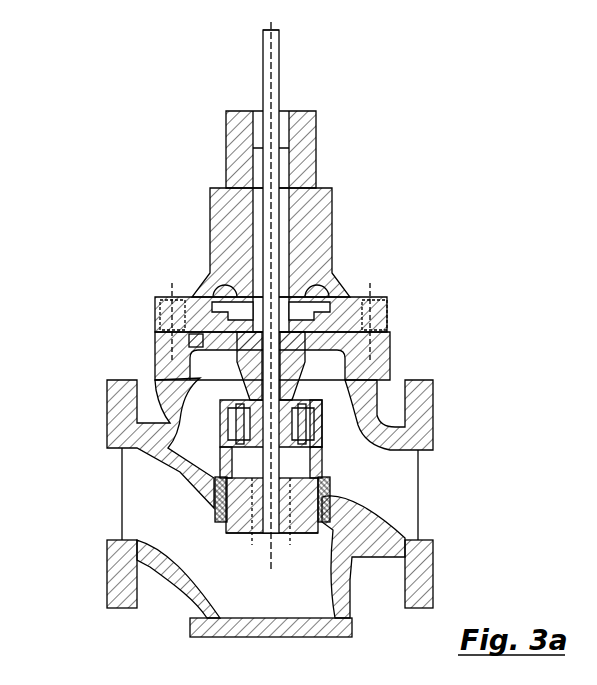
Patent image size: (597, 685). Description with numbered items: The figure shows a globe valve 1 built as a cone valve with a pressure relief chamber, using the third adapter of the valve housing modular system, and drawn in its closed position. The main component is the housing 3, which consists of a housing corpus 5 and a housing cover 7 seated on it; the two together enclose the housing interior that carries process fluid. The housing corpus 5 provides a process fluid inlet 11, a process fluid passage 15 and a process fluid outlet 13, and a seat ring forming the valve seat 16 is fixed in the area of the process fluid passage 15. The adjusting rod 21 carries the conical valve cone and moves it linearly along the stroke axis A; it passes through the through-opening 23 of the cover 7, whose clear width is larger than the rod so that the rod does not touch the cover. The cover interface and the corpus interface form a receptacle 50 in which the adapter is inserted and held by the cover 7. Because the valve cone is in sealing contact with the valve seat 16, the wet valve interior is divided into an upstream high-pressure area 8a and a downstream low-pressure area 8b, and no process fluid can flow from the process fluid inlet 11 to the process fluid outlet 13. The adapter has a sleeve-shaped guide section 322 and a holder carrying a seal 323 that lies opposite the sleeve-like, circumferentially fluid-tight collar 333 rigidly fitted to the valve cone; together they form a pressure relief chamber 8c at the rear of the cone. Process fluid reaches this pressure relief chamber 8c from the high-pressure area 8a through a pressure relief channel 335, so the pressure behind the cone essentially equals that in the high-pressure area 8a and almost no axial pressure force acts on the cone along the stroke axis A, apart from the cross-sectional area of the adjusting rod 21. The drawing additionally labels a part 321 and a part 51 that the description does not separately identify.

The globe valve 1 is at (275, 352).
The housing 3 is at (275, 430).
The housing corpus 5 is at (278, 507).
The housing cover 7 is at (312, 148).
The process fluid inlet 11 is at (115, 513).
The process fluid outlet 13 is at (427, 500).
The process fluid passage 15 is at (306, 504).
The valve seat 16 is at (318, 504).
The adjusting rod 21 is at (273, 222).
The through-opening 23 is at (283, 186).
The receptacle 50 is at (257, 388).
The bonnet flange bolt 51 is at (380, 327).
The gland ring 321 is at (205, 356).
The guide section 322 is at (284, 386).
The seal 323 is at (318, 427).
The collar 333 is at (326, 462).
The pressure relief channel 335 is at (224, 535).
The high-pressure area 8a is at (133, 531).
The low-pressure area 8b is at (231, 432).
The pressure relief chamber 8c is at (230, 476).
The stroke axis A is at (272, 109).